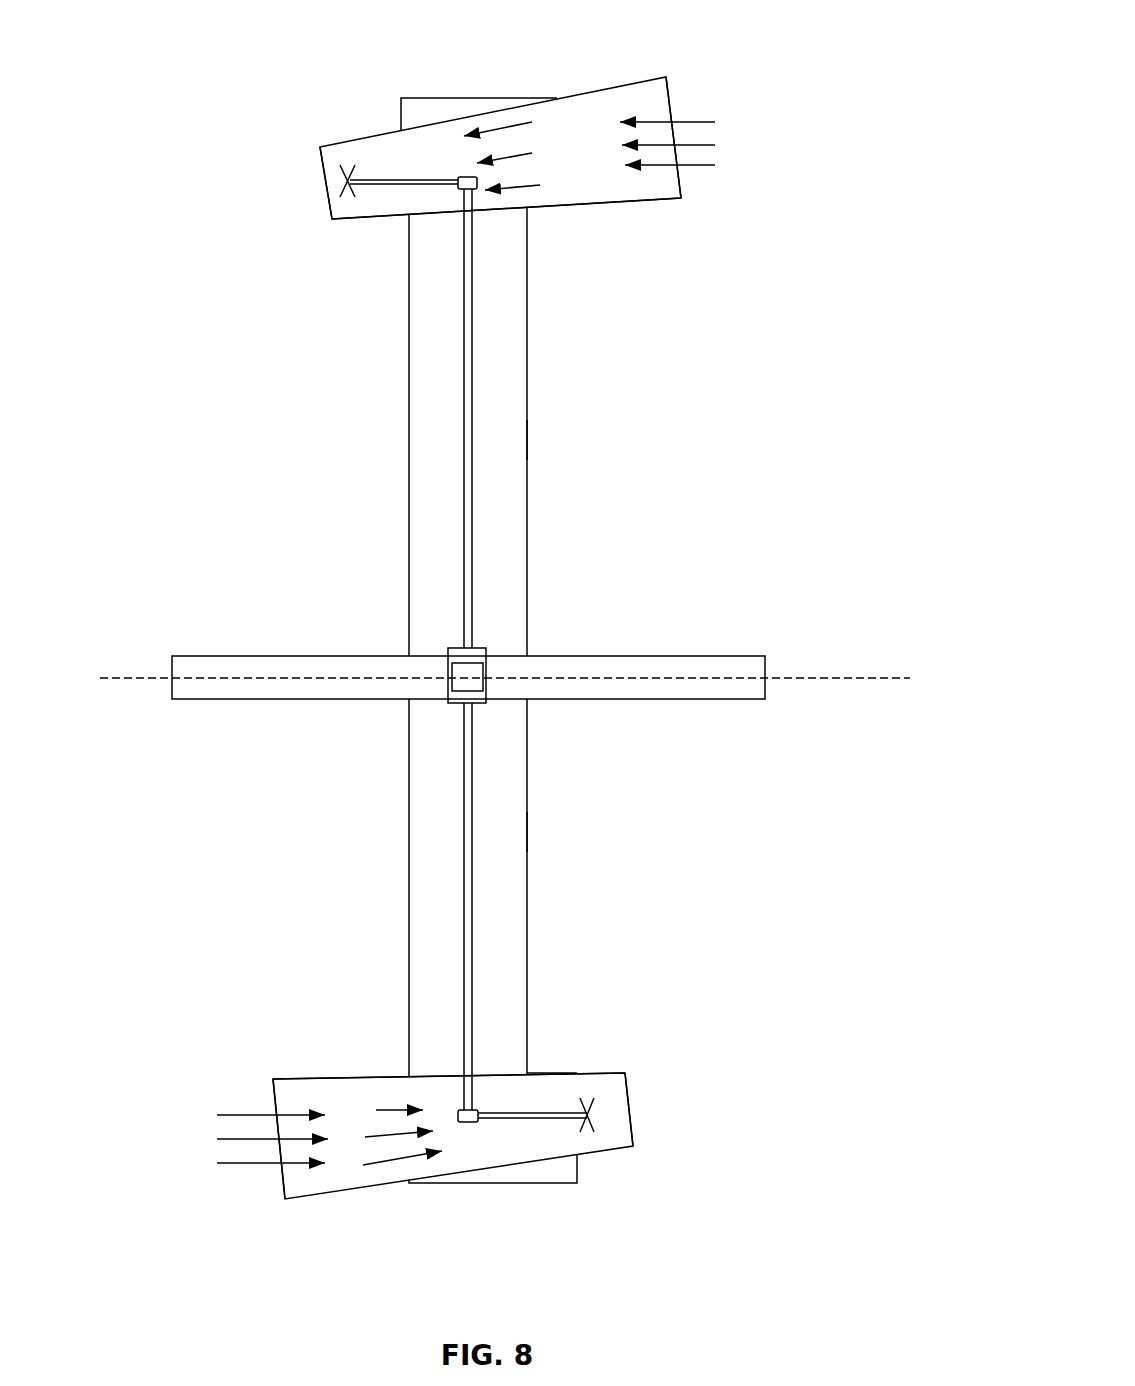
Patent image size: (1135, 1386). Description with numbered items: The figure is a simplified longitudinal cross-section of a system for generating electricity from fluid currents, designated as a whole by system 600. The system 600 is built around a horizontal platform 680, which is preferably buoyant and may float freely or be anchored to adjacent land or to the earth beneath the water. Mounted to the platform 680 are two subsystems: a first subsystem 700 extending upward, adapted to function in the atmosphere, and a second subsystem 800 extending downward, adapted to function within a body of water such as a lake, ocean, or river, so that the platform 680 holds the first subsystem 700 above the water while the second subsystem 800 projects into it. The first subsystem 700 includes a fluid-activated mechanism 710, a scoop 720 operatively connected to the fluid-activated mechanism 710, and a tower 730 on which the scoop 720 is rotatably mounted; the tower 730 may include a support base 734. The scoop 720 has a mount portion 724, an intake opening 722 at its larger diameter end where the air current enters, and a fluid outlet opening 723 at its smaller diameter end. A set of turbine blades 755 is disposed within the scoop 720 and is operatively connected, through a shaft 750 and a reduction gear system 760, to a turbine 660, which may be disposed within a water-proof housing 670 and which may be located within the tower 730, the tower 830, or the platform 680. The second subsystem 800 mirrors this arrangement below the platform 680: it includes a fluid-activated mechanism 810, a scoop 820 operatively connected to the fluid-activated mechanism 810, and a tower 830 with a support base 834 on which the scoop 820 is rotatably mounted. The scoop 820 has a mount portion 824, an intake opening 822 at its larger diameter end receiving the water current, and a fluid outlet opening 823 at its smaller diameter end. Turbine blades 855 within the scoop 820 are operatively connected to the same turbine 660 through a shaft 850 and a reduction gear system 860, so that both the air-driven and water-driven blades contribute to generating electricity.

The system for generating electricity 600 is at (145, 476).
The turbine 660 is at (485, 678).
The water-proof housing 670 is at (487, 670).
The platform 680 is at (738, 657).
The first subsystem 700 is at (343, 413).
The fluid-activated mechanism 710 is at (468, 107).
The scoop 720 is at (587, 115).
The intake opening 722 is at (678, 183).
The fluid outlet opening 723 is at (325, 197).
The mount portion 724 is at (443, 212).
The tower 730 is at (502, 387).
The support base 734 is at (527, 440).
The shaft 750 is at (380, 178).
The turbine blades 755 is at (342, 175).
The reduction gear system 760 is at (480, 186).
The second subsystem 800 is at (313, 903).
The fluid-activated mechanism 810 is at (545, 1170).
The scoop 820 is at (348, 1173).
The intake opening 822 is at (273, 1097).
The fluid outlet opening 823 is at (630, 1097).
The mount portion 824 is at (505, 1077).
The tower 830 is at (512, 904).
The support base 834 is at (527, 832).
The shaft 850 is at (538, 1112).
The turbine blades 855 is at (587, 1100).
The reduction gear system 860 is at (462, 1122).